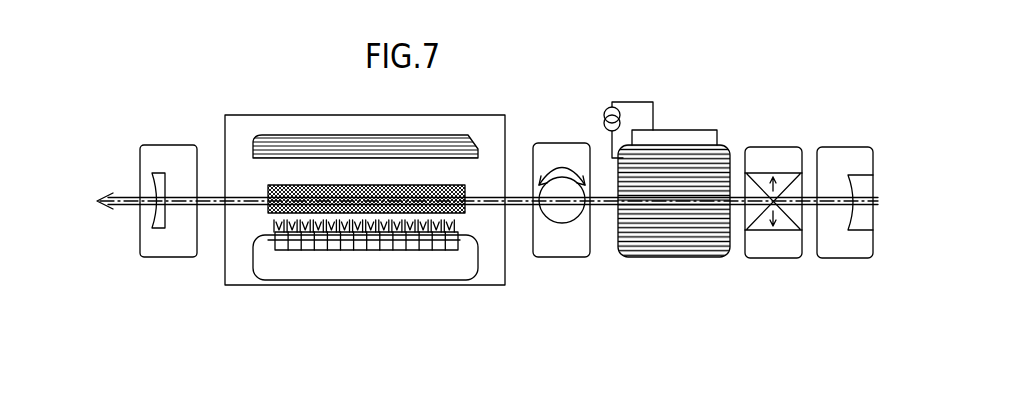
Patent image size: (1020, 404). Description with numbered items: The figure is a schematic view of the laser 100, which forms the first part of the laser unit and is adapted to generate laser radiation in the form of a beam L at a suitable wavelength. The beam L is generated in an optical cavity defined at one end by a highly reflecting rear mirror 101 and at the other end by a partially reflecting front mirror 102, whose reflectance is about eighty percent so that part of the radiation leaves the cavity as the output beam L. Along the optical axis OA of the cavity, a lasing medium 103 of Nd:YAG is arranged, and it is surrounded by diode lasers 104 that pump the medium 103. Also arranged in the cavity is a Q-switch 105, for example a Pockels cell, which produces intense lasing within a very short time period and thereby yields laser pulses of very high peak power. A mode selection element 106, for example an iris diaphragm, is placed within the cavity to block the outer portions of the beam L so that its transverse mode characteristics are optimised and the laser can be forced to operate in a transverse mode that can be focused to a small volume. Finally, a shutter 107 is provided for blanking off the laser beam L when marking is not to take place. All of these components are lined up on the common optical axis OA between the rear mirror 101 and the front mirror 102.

The laser 100 is at (546, 82).
The rear mirror 101 is at (845, 242).
The front mirror 102 is at (172, 243).
The lasing medium 103 is at (453, 203).
The diode lasers 104 is at (348, 250).
The Q-switch 105 is at (678, 247).
The mode selection element 106 is at (775, 248).
The shutter 107 is at (560, 158).
The optical axis OA is at (488, 201).
The laser beam L is at (107, 195).